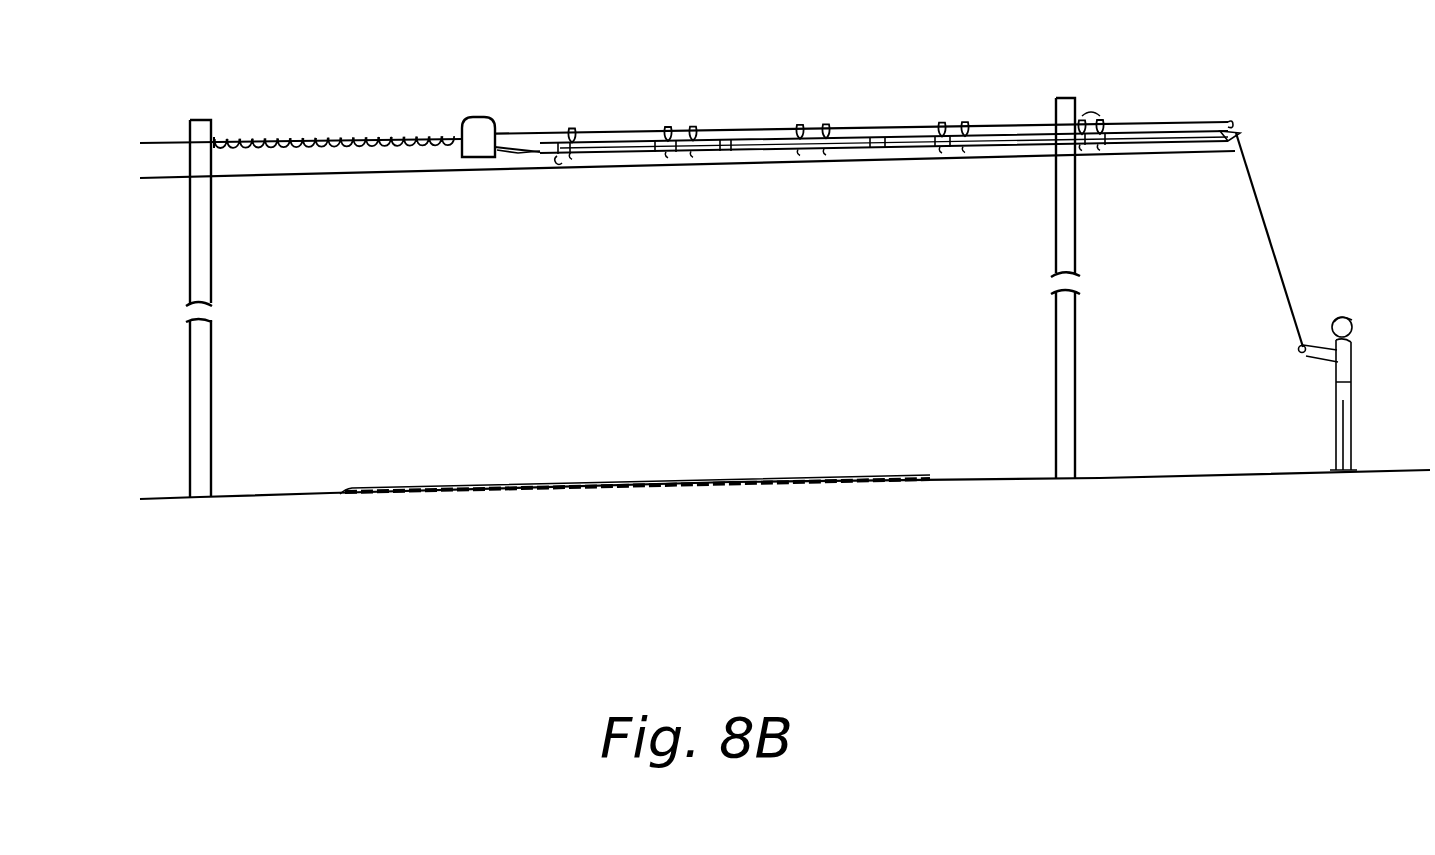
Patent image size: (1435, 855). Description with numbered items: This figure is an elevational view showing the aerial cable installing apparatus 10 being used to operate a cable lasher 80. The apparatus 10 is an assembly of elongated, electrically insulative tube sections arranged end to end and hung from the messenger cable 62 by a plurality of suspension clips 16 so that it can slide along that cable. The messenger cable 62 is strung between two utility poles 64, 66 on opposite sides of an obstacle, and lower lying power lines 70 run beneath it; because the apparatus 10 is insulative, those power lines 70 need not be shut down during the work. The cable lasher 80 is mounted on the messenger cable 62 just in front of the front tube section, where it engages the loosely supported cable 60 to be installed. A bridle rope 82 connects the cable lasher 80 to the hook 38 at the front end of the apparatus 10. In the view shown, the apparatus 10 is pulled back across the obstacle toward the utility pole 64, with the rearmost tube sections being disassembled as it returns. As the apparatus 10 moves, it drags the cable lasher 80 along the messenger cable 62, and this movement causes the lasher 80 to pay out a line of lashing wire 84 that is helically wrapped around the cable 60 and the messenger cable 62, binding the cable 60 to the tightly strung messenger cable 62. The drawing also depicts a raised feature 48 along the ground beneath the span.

The aerial cable installing apparatus 10 is at (870, 133).
The suspension clips 16 is at (695, 126).
The hook 38 is at (540, 154).
The ground trench 48 is at (609, 487).
The cable 60 is at (354, 150).
The messenger cable 62 is at (372, 133).
The utility pole 64 is at (1078, 205).
The utility pole 66 is at (191, 243).
The power lines 70 is at (738, 165).
The cable lasher 80 is at (233, 117).
The bridle rope 82 is at (510, 153).
The lashing wire 84 is at (340, 150).